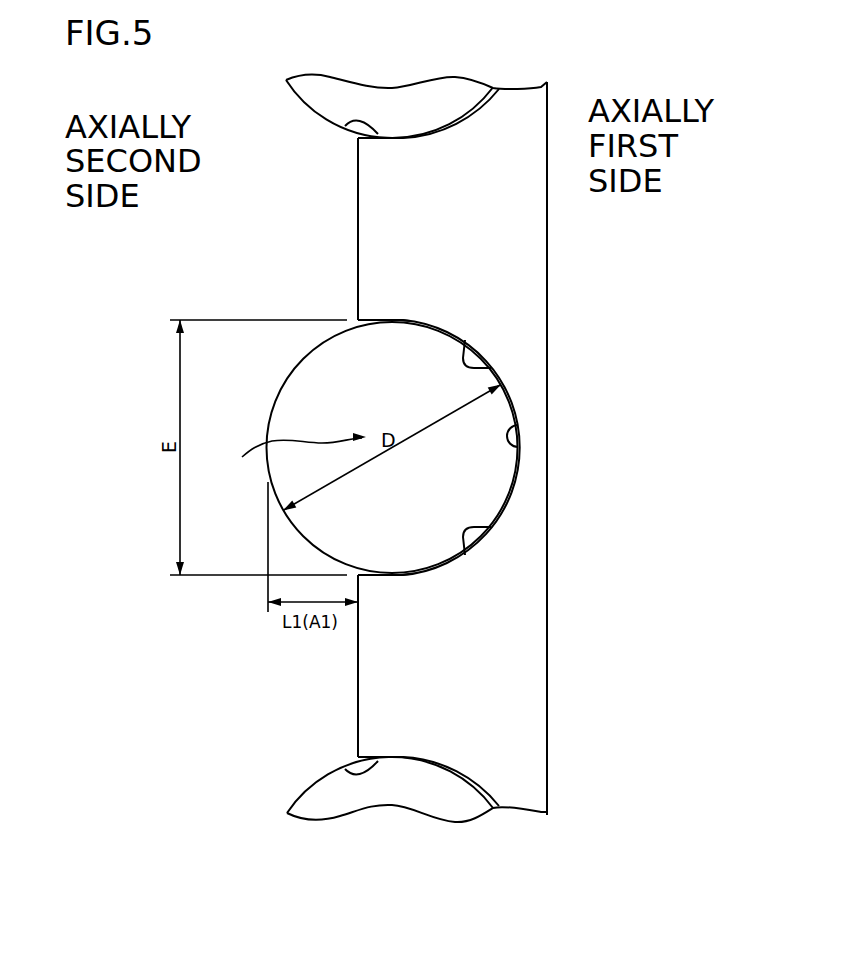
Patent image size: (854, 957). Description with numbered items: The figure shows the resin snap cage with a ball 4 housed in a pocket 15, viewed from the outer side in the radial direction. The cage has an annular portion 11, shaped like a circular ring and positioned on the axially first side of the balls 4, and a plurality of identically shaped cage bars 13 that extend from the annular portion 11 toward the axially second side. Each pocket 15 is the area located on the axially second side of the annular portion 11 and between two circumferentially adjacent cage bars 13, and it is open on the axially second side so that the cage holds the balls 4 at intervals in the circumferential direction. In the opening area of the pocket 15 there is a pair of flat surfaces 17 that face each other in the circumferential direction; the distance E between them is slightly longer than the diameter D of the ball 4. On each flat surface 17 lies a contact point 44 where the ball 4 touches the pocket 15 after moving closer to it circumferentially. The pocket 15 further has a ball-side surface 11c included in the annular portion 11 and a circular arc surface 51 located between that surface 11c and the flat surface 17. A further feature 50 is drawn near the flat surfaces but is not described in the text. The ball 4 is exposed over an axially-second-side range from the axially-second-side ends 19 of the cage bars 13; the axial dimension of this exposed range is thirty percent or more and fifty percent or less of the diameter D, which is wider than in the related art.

The ball 4 is at (312, 108).
The annular portion 11 is at (535, 460).
The ball-side surface 11c is at (520, 425).
The cage bar 13 is at (383, 243).
The pocket 15 is at (292, 453).
The flat surface 17 is at (353, 123).
The axially-second-side end 19 is at (358, 222).
The contact point 44 is at (393, 323).
The edge portion 50 is at (405, 323).
The circular arc surface 51 is at (491, 368).